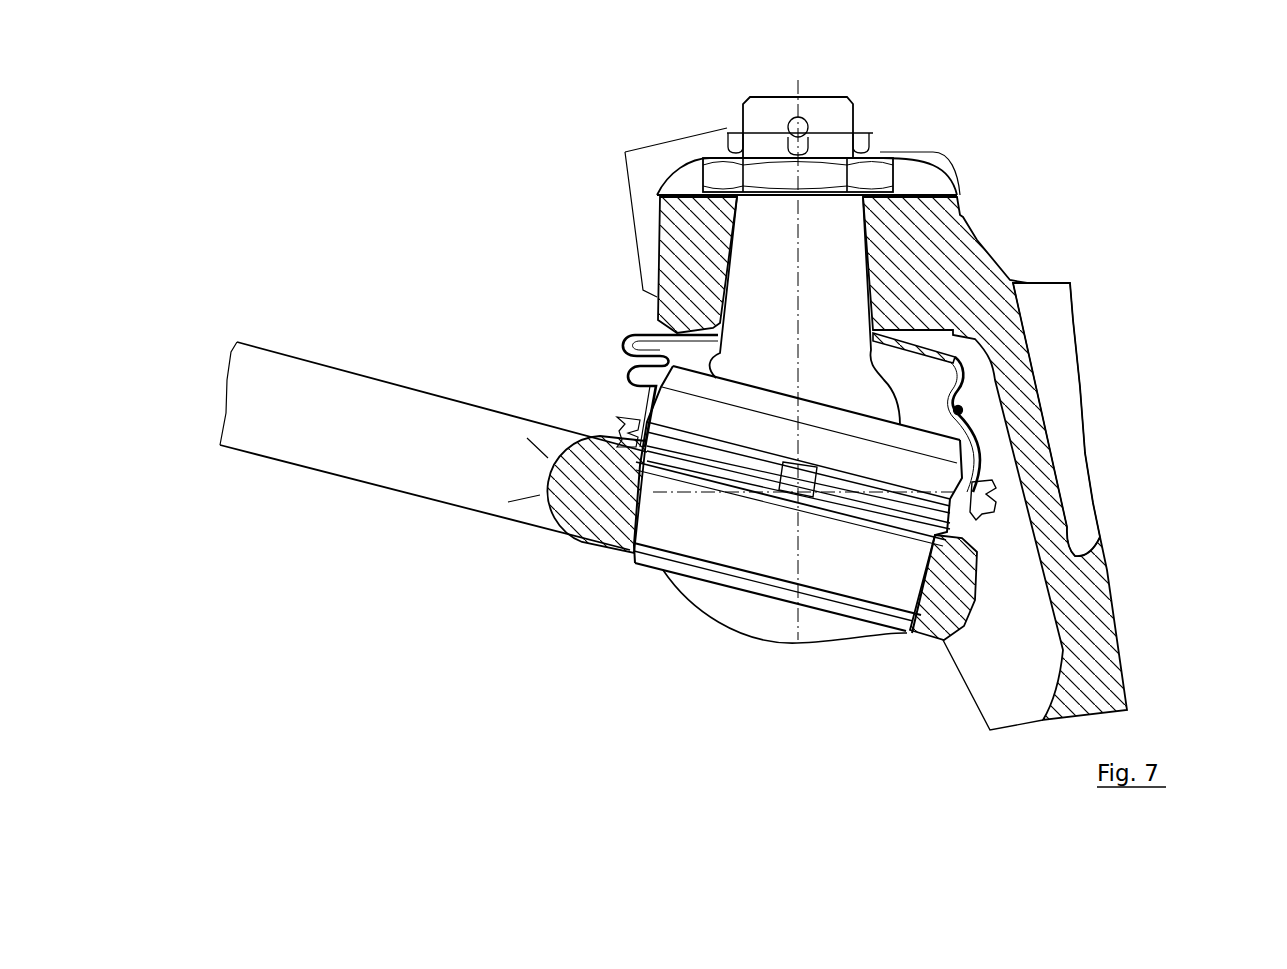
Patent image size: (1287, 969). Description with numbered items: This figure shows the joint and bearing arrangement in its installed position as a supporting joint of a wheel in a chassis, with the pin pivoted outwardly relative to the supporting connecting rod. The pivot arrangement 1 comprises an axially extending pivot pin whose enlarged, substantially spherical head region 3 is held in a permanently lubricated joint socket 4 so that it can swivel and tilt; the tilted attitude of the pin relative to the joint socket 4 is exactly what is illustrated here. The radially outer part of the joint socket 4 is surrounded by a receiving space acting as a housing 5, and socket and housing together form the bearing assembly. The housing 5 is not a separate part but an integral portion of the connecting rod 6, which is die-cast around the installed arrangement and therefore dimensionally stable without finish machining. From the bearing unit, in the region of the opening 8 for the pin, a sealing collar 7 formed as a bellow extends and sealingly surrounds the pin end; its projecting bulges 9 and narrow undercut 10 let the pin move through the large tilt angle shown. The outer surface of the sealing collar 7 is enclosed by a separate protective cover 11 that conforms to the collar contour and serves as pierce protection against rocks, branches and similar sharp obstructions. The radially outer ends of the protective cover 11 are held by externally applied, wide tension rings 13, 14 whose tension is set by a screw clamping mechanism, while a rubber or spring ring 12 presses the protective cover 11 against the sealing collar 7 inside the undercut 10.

The pivot arrangement 1 is at (921, 112).
The head region 3 is at (870, 413).
The joint socket 4 is at (875, 580).
The housing 5 is at (598, 533).
The connecting rod 6 is at (462, 475).
The sealing collar 7 is at (957, 337).
The opening 8 is at (929, 418).
The projecting bulges 9 is at (614, 371).
The narrow undercut 10 is at (960, 410).
The protective cover 11 is at (987, 497).
The spring ring 12 is at (986, 420).
The tension ring 13 is at (1047, 572).
The tension ring 14 is at (890, 333).